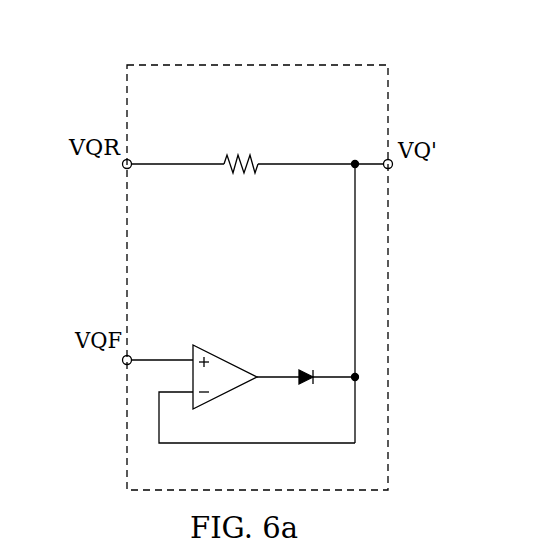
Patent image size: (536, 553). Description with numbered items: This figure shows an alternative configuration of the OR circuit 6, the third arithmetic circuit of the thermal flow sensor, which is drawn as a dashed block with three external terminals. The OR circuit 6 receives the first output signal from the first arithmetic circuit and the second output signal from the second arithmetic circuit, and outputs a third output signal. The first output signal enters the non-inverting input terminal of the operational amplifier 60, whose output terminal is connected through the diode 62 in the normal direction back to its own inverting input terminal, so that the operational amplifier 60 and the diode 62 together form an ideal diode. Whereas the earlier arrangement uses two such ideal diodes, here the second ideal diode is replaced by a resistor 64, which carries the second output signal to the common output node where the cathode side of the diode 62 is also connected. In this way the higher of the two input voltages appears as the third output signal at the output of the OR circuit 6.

The OR circuit 6 is at (180, 65).
The operational amplifier 60 is at (217, 355).
The diode 62 is at (305, 362).
The resistor 64 is at (240, 152).